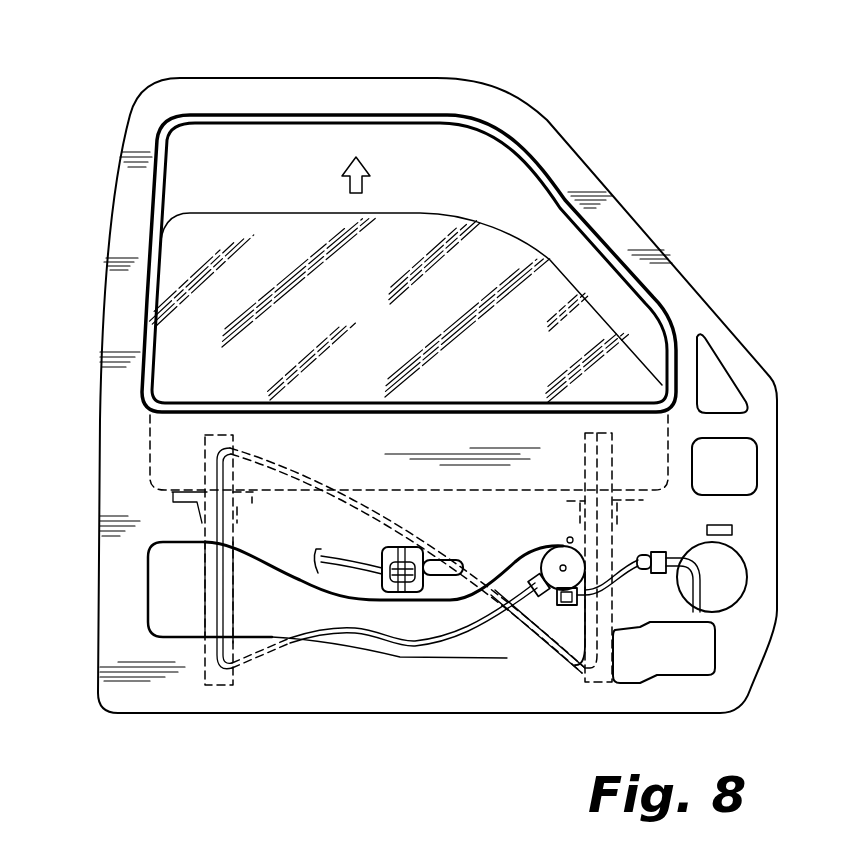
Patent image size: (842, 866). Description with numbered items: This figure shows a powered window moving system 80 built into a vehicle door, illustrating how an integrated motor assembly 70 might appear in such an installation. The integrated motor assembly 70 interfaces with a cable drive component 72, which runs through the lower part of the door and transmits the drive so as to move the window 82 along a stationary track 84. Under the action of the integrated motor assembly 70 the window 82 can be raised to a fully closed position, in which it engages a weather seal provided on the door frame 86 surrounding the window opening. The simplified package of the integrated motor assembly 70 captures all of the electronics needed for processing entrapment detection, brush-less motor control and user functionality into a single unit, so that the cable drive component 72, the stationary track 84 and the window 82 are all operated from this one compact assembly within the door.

The powered window moving system 80 is at (498, 53).
The window 82 is at (167, 253).
The stationary track 84 is at (217, 686).
The door frame 86 is at (605, 181).
The cable drive component 72 is at (368, 637).
The integrated motor assembly 70 is at (550, 605).